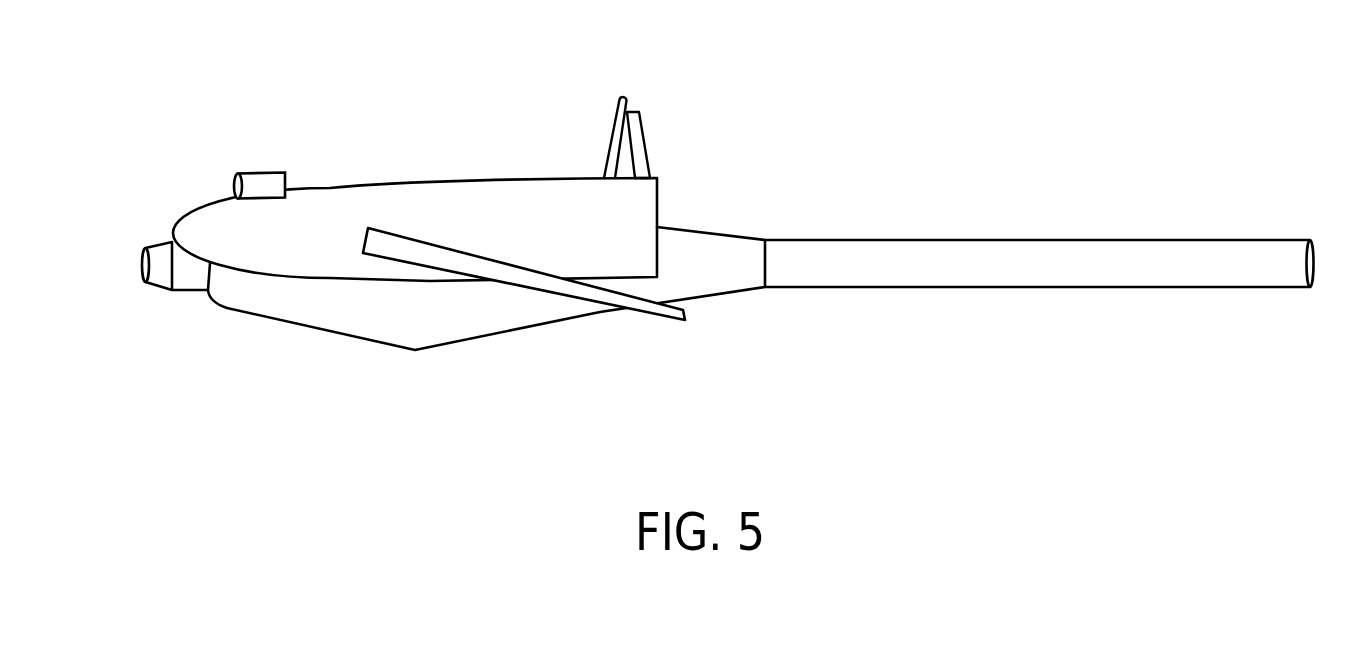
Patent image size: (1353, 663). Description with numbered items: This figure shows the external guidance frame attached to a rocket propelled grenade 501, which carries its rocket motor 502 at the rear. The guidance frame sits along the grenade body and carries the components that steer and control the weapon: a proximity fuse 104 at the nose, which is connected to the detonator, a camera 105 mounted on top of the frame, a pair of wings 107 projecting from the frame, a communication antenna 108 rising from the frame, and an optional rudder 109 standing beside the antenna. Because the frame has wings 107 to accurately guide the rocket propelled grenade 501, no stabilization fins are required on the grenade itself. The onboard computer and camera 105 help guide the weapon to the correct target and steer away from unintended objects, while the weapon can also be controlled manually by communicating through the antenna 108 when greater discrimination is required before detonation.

The proximity fuse 104 is at (157, 257).
The camera 105 is at (257, 185).
The wings 107 is at (410, 248).
The communication antenna 108 is at (612, 152).
The rudder 109 is at (646, 148).
The rocket propelled grenade 501 is at (425, 300).
The rocket motor 502 is at (1105, 263).